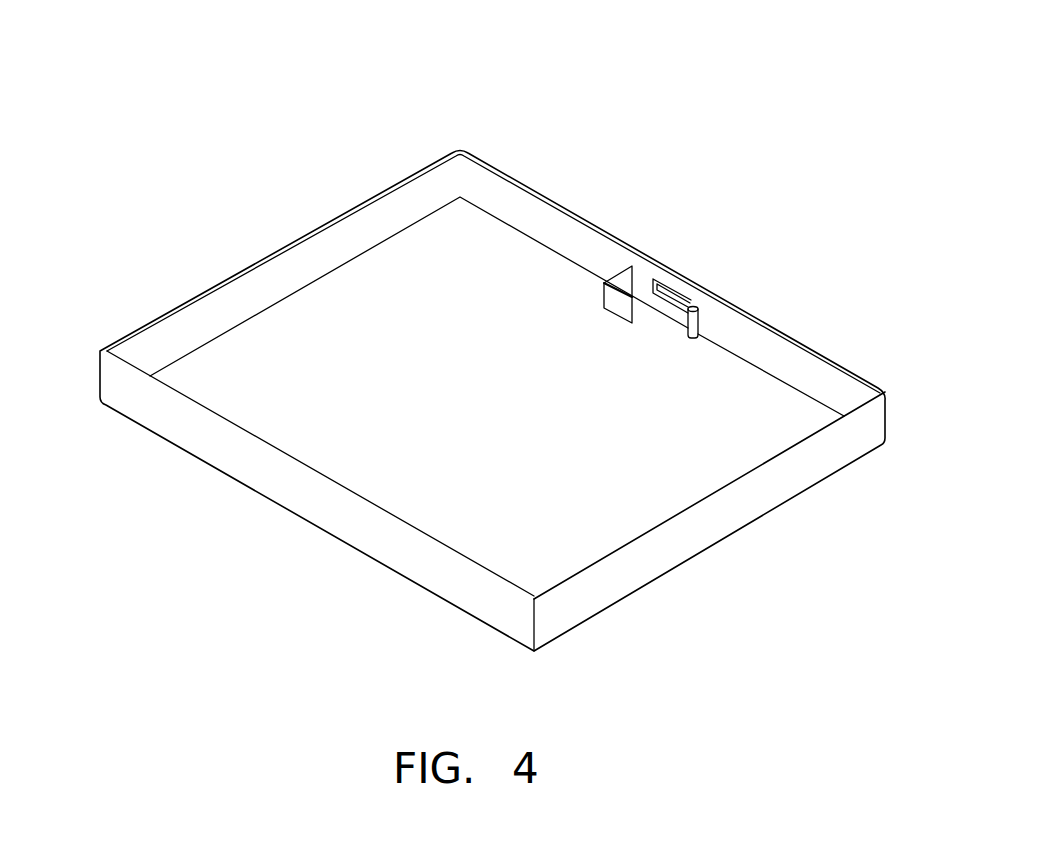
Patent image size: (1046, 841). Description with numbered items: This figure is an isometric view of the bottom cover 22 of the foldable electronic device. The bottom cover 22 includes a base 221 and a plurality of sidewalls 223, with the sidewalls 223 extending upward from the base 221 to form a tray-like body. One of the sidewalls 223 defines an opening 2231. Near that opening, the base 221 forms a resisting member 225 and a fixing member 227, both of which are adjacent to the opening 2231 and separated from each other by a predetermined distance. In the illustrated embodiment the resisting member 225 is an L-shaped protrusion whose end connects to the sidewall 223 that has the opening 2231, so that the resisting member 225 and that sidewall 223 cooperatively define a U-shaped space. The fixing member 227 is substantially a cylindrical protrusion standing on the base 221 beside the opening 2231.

The bottom cover 22 is at (492, 342).
The base 221 is at (463, 268).
The sidewalls 223 is at (567, 238).
The opening 2231 is at (677, 295).
The resisting member 225 is at (620, 303).
The fixing member 227 is at (699, 311).